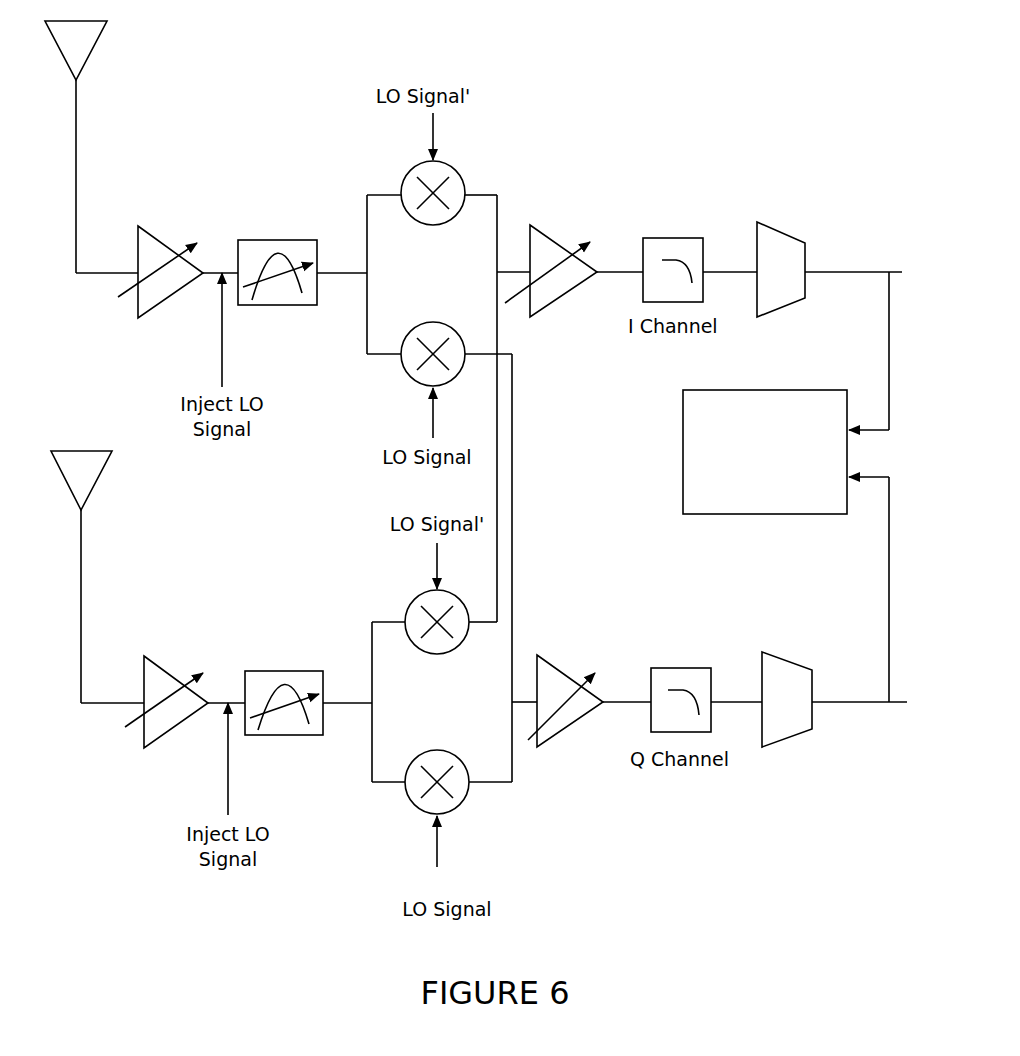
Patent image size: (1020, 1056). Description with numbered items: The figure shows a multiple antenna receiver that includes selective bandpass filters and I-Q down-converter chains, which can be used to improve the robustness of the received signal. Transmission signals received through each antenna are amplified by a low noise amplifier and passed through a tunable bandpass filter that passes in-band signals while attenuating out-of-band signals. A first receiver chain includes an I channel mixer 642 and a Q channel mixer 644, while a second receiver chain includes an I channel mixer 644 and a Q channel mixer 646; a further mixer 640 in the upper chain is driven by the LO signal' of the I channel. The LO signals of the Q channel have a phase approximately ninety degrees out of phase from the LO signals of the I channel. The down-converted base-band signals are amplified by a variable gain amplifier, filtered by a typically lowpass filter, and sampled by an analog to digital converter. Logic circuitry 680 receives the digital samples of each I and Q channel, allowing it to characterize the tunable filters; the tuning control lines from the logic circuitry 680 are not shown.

The I channel mixer 640 is at (457, 177).
The I channel mixer 642 is at (407, 372).
The Q channel mixer 644 is at (412, 610).
The Q channel mixer 646 is at (463, 798).
The logic circuitry 680 is at (747, 488).